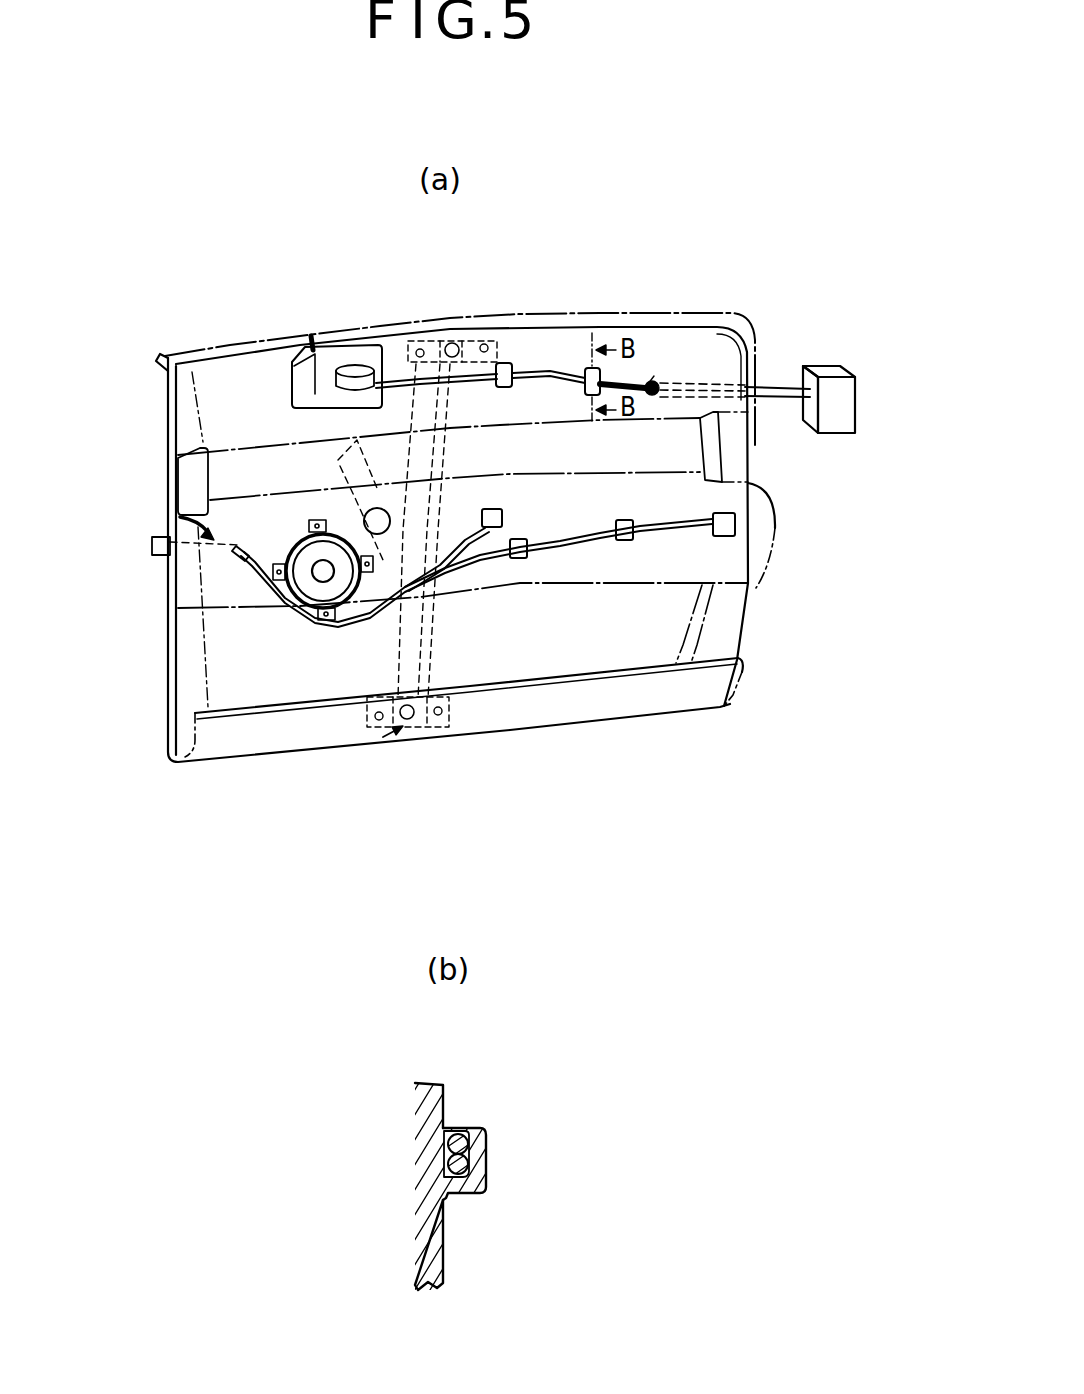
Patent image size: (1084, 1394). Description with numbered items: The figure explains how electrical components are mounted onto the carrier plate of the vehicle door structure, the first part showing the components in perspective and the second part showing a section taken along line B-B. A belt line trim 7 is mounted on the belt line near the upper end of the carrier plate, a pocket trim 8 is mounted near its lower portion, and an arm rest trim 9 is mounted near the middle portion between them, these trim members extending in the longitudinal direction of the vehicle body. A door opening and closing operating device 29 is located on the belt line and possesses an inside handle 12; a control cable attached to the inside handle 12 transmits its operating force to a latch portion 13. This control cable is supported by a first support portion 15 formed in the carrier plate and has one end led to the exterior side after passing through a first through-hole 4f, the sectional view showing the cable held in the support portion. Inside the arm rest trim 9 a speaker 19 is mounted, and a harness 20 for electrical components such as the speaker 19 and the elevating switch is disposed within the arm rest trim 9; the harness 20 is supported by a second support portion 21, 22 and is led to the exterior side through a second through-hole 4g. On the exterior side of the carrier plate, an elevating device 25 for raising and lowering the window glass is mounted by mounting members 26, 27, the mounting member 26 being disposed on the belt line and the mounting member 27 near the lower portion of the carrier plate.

The first through-hole 4f is at (650, 380).
The second through-hole 4g is at (238, 554).
The belt line trim 7 is at (751, 350).
The pocket trim 8 is at (744, 682).
The arm rest trim 9 is at (775, 528).
The inside handle 12 is at (357, 368).
The latch portion 13 is at (860, 370).
The first support portion 15 is at (506, 362).
The speaker 19 is at (320, 608).
The harness 20 is at (178, 517).
The second support portion 21 is at (520, 560).
The second support portion 22 is at (624, 543).
The elevating device 25 is at (392, 738).
The mounting member 26 is at (480, 340).
The mounting member 27 is at (448, 730).
The door opening and closing operating device 29 is at (312, 340).